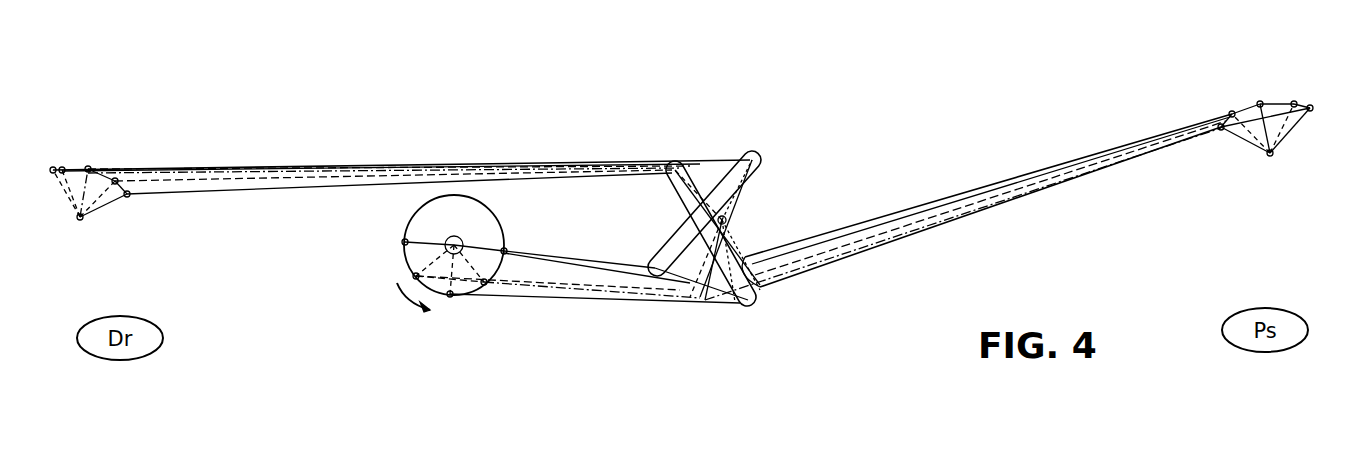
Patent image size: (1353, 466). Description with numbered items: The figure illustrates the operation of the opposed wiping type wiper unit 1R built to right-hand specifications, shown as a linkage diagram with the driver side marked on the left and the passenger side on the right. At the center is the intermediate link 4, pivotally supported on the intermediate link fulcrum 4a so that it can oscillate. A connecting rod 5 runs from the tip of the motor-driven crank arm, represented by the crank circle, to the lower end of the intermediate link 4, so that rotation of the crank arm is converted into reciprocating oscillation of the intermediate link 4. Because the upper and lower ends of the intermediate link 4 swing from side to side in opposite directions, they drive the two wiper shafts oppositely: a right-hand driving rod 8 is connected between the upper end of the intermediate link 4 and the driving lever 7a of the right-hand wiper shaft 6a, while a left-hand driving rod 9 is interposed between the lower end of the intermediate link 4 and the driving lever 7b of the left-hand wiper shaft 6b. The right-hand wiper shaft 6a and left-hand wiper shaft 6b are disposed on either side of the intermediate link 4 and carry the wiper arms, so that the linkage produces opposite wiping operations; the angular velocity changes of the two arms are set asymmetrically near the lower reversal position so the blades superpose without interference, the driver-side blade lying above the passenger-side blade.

The wiper unit 1R is at (908, 98).
The intermediate link 4 is at (760, 165).
The intermediate link fulcrum 4a is at (760, 212).
The connecting rod 5 is at (613, 262).
The right-hand wiper shaft 6a is at (80, 219).
The left-hand wiper shaft 6b is at (1272, 156).
The driving lever 7a is at (120, 197).
The driving lever 7b is at (1243, 140).
The right-hand driving rod 8 is at (284, 192).
The left-hand driving rod 9 is at (920, 215).